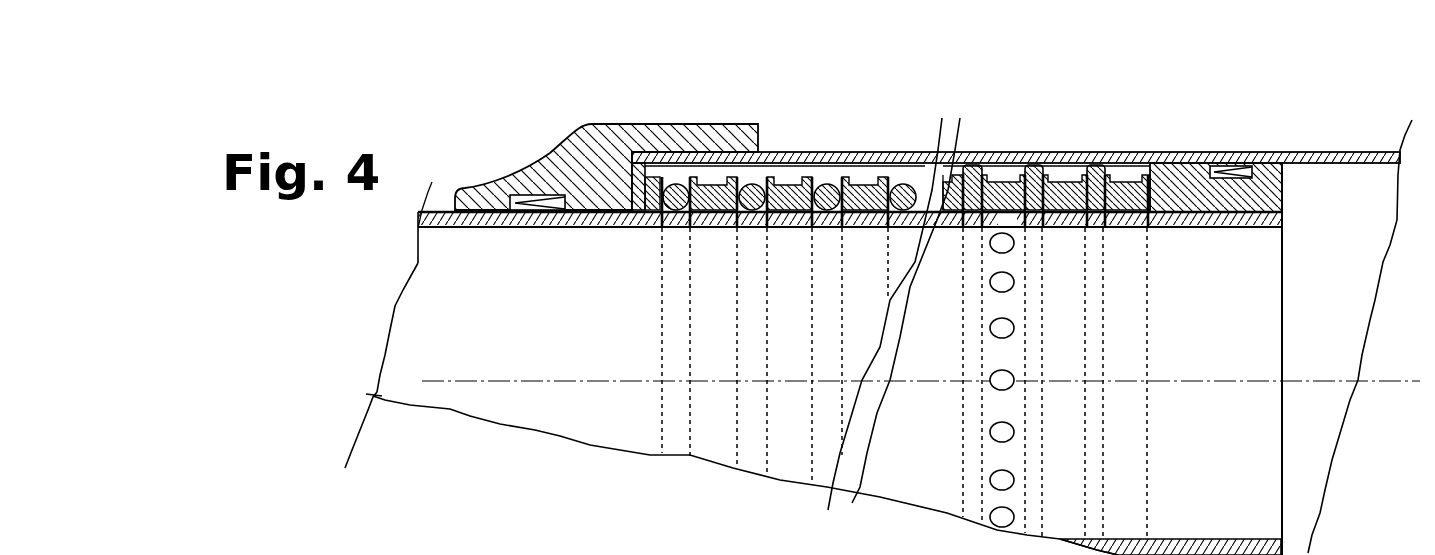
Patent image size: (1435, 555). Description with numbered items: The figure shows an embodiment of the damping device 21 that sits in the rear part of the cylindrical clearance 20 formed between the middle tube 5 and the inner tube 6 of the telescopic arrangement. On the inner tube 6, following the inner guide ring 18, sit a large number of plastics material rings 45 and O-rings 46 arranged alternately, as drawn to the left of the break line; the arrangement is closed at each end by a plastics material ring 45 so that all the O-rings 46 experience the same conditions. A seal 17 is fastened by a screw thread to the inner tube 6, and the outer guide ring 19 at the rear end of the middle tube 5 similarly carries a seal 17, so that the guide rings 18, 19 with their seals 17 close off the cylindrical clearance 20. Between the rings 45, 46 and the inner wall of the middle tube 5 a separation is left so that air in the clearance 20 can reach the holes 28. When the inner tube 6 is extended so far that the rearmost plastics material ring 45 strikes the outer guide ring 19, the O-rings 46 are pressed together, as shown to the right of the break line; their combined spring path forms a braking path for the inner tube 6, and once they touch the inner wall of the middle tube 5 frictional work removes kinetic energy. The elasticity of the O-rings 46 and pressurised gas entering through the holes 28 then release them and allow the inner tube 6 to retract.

The middle tube 5 is at (1280, 150).
The inner tube 6 is at (1247, 282).
The seal 17 is at (532, 198).
The inner guide ring 18 is at (1175, 167).
The outer guide ring 19 is at (652, 140).
The cylindrical clearance 20 is at (862, 173).
The damping device 21 is at (818, 130).
The holes 28 is at (1000, 237).
The plastics material ring 45 is at (712, 190).
The O-ring 46 is at (758, 190).